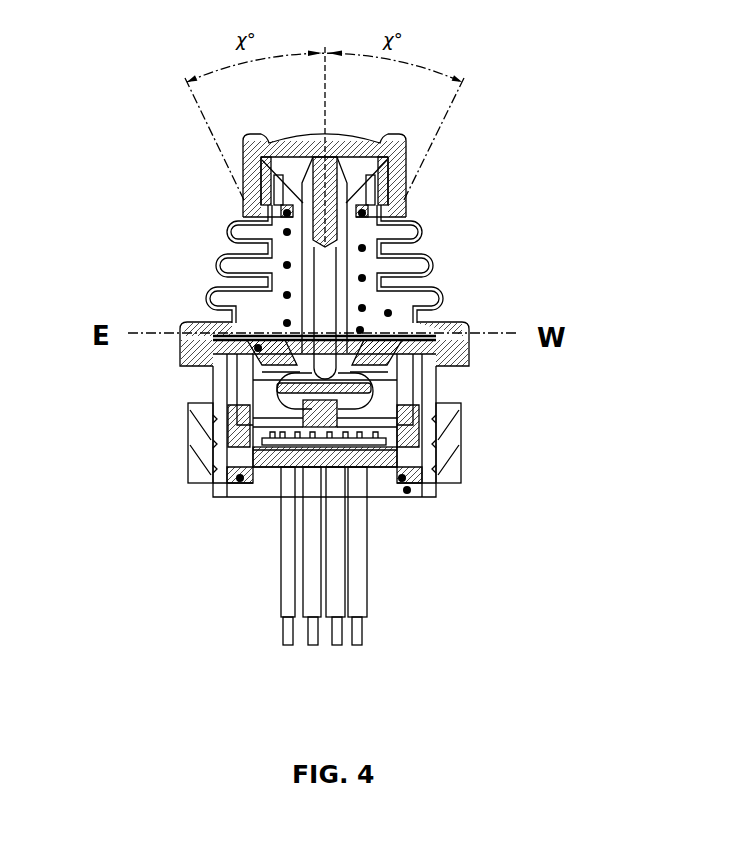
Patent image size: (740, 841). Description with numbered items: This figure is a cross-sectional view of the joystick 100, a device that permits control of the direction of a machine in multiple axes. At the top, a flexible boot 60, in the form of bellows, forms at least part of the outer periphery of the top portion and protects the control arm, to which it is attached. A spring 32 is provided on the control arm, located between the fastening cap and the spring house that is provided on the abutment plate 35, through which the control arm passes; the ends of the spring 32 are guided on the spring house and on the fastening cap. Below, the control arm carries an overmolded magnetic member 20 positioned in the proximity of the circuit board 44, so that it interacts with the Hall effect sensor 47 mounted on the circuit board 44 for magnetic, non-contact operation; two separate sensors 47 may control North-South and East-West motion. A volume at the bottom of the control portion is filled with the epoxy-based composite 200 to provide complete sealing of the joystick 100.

The joystick 100 is at (441, 232).
The magnetic member 20 is at (283, 405).
The spring 32 is at (390, 313).
The abutment plate 35 is at (178, 370).
The circuit board 44 is at (348, 470).
The sensor 47 is at (407, 490).
The flexible boot 60 is at (460, 368).
The epoxy-based composite 200 is at (440, 497).